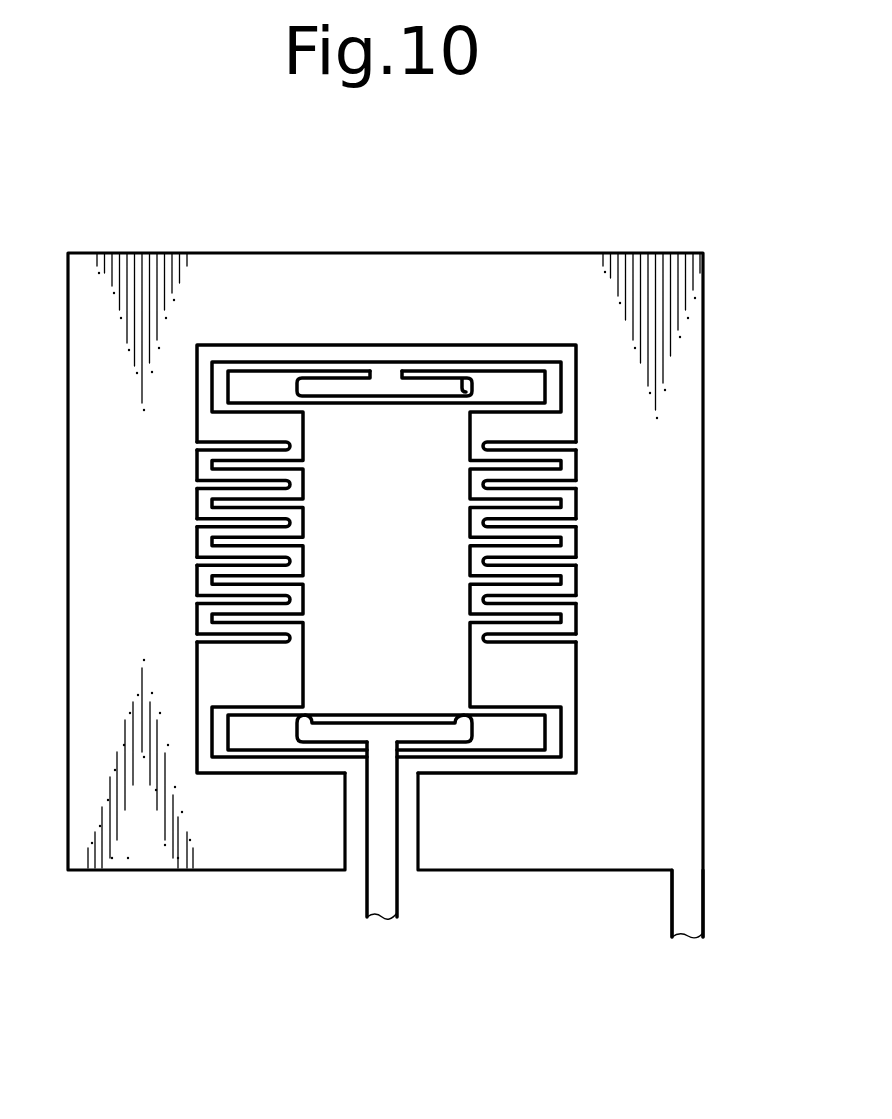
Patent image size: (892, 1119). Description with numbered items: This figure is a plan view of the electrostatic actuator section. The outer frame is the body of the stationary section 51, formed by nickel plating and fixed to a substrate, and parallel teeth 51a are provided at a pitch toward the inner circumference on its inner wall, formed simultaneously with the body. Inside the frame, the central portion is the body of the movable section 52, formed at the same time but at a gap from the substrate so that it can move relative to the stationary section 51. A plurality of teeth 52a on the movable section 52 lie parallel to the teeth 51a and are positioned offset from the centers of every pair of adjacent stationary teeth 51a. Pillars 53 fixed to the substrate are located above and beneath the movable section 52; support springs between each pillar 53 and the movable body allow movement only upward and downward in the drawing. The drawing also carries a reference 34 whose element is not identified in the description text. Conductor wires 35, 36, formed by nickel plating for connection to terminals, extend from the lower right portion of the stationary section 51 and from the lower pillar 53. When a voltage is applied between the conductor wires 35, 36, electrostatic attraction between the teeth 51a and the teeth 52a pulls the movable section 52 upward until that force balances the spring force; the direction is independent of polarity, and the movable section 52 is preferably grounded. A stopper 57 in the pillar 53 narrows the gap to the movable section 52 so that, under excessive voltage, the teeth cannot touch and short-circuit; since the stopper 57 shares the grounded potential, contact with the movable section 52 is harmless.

The frame electrode 34 is at (507, 364).
The conductor wire 35 is at (672, 888).
The conductor wire 36 is at (402, 887).
The stationary section 51 is at (650, 490).
The teeth 51a is at (528, 443).
The movable section 52 is at (428, 682).
The teeth 52a is at (533, 662).
The pillar 53 is at (383, 372).
The stopper 57 is at (462, 385).